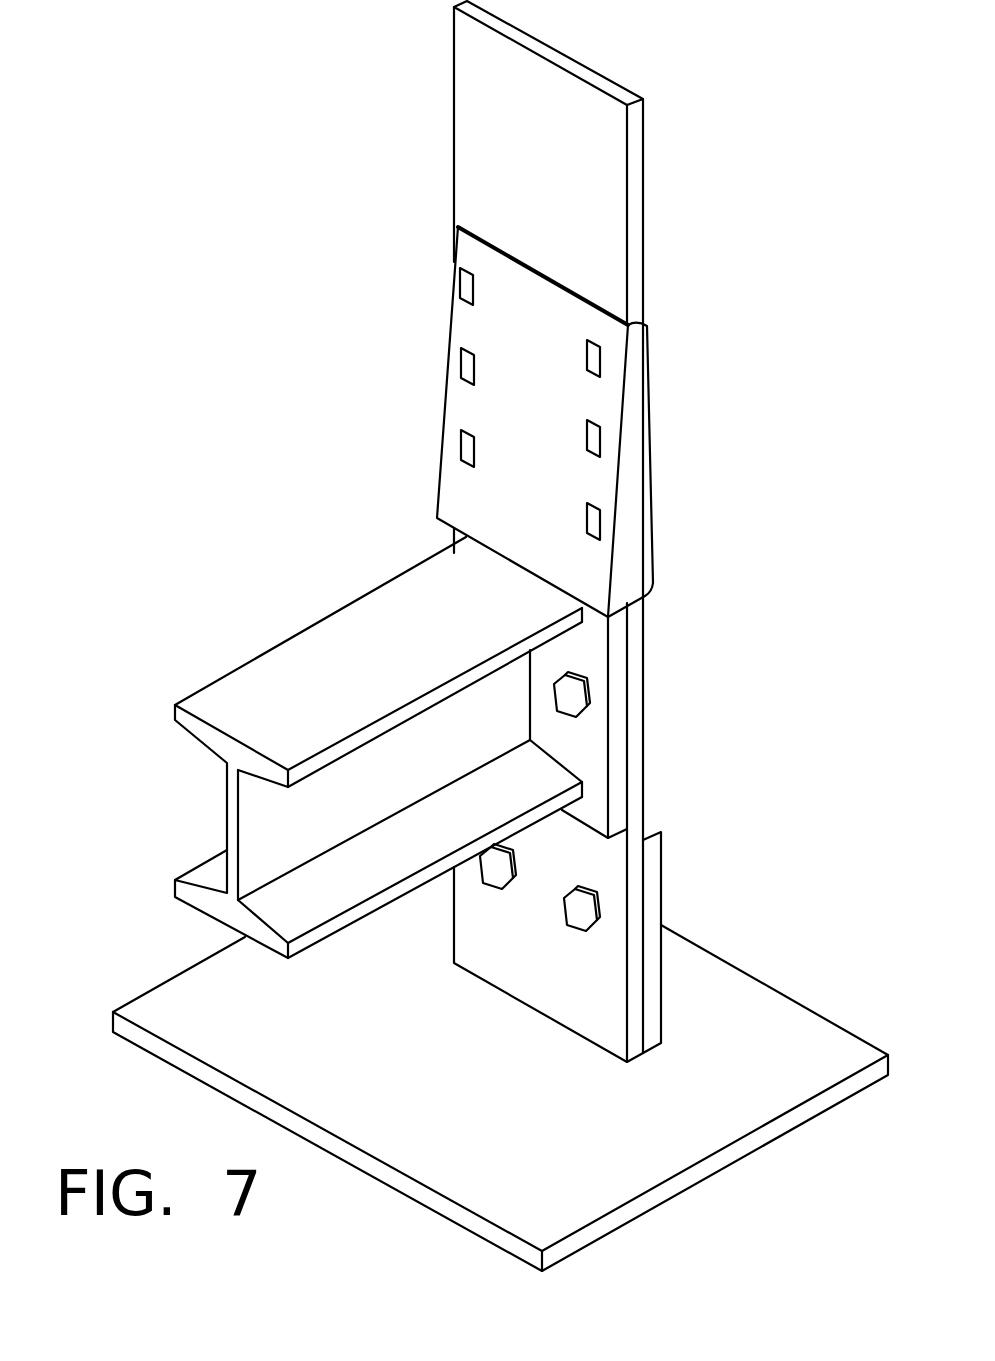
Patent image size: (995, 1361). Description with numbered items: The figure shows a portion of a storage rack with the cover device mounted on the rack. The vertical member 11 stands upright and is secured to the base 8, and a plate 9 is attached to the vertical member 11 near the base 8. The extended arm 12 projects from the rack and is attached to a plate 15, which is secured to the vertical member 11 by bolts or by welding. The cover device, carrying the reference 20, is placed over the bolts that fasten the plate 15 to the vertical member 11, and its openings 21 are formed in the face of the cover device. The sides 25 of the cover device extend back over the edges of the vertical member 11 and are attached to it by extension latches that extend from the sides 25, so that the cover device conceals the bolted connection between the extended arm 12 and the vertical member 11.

The base 8 is at (732, 1112).
The plate 9 is at (652, 877).
The vertical member 11 is at (483, 168).
The extended arm 12 is at (342, 625).
The plate 15 is at (618, 643).
The connector plate 20 is at (447, 318).
The slots 21 is at (545, 323).
The sides 25 is at (633, 428).